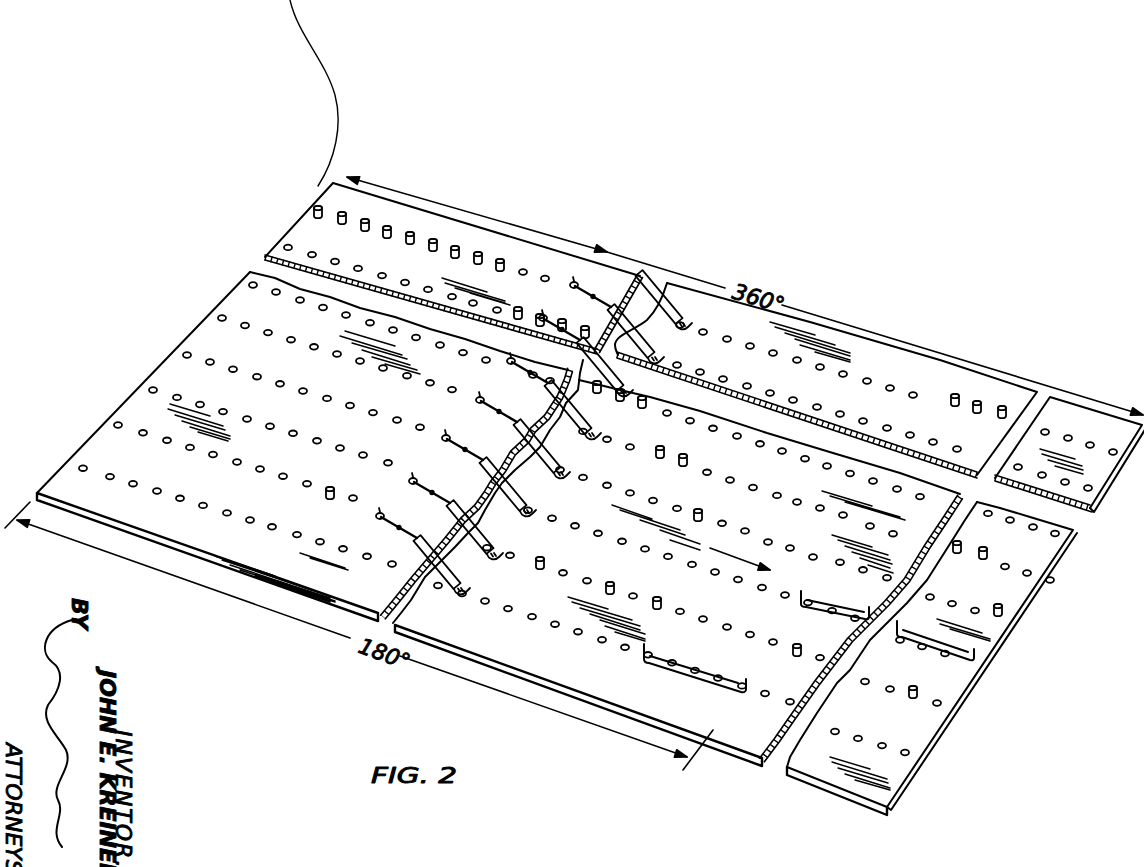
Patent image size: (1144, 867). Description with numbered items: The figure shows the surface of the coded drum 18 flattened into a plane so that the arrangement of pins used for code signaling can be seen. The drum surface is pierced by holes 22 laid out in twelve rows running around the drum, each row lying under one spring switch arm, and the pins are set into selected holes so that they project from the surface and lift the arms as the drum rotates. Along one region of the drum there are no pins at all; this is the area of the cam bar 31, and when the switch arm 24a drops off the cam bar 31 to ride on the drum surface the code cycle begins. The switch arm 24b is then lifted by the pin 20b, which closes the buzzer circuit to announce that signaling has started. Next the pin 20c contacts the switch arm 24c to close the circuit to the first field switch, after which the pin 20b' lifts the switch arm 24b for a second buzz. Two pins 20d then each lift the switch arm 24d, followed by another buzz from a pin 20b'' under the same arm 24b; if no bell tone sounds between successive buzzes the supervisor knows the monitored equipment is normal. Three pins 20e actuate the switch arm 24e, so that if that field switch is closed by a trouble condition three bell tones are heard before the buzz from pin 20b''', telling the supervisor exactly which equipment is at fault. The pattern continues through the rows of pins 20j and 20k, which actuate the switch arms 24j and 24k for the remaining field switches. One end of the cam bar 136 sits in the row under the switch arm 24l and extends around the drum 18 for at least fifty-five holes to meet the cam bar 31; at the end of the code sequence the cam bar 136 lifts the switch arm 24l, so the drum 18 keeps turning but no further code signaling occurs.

The rotating drum 18 is at (198, 331).
The pin 20b is at (809, 639).
The pin 20b' is at (640, 580).
The pin 20b'' is at (574, 558).
The pin 20b''' is at (363, 488).
The pin 20c is at (704, 513).
The pins 20d is at (688, 457).
The pins 20e is at (636, 376).
The pins 20j is at (583, 327).
The pins 20k is at (477, 263).
The holes 22 is at (338, 445).
The switch arm 24a is at (456, 592).
The switch arm 24b is at (490, 556).
The switch arm 24c is at (556, 475).
The switch arm 24d is at (588, 437).
The switch arm 24e is at (624, 392).
The switch arm 24j is at (662, 352).
The switch arm 24k is at (689, 320).
The switch arm 24l is at (523, 514).
The cam bar 31 is at (705, 660).
The cam bar 136 is at (855, 606).